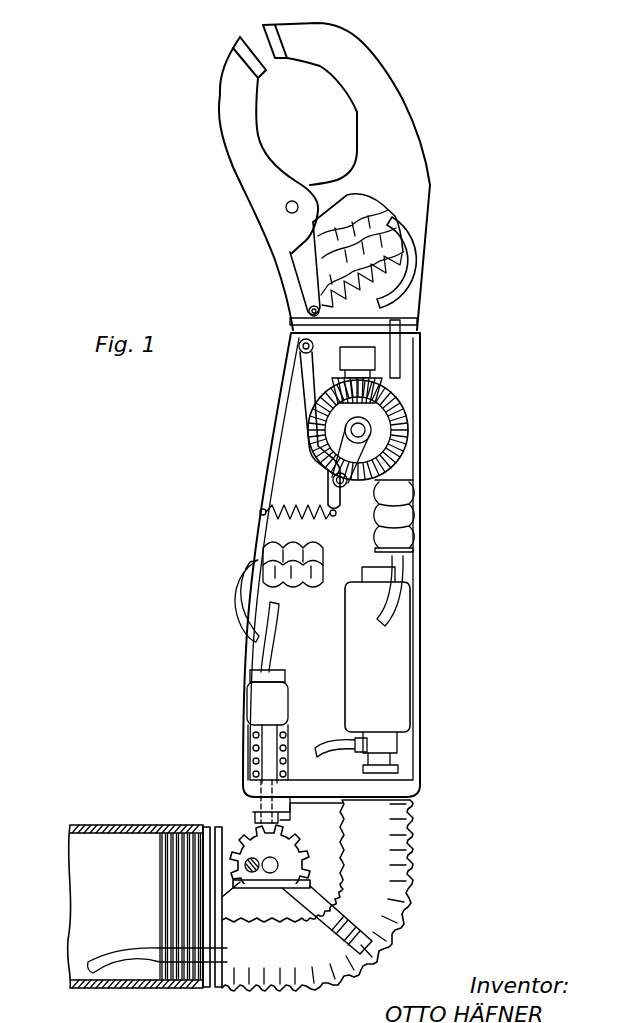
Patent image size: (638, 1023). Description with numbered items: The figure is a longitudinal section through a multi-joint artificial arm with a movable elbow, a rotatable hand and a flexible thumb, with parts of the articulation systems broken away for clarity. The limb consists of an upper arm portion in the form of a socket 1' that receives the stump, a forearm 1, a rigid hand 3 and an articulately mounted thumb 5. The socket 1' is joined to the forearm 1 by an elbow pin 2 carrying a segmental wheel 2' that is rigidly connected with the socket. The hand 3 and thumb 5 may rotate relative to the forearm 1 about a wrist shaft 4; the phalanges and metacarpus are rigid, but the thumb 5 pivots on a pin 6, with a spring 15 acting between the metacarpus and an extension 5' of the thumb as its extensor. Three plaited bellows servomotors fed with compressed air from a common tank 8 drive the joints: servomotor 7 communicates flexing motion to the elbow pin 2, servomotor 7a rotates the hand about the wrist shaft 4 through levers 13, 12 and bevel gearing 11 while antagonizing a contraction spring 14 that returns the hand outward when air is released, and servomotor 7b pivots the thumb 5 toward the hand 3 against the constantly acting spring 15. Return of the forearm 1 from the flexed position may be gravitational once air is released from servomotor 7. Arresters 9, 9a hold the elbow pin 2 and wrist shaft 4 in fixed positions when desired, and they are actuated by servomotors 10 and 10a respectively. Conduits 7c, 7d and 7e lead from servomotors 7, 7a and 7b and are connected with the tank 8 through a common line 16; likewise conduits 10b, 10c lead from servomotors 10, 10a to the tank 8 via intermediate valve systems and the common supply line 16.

The forearm 1 is at (317, 565).
The socket 1' is at (145, 884).
The elbow pin 2 is at (240, 847).
The segmental wheel 2' is at (297, 879).
The rigid hand 3 is at (417, 182).
The shaft 4 is at (367, 350).
The thumb 5 is at (249, 183).
The extension of the thumb 5' is at (278, 269).
The pin 6 is at (286, 208).
The servomotor 7 is at (395, 888).
The servomotor 7a is at (287, 565).
The servomotor 7b is at (310, 253).
The conduit 7c is at (105, 961).
The conduit 7d is at (238, 610).
The conduit 7e is at (393, 290).
The tank 8 is at (397, 685).
The arrester 9 is at (258, 812).
The arrester 9a is at (396, 355).
The servomotor 10 is at (272, 707).
The servomotor 10a is at (417, 505).
The conduit 10b is at (272, 632).
The conduit 10c is at (393, 595).
The bevel gearing 11 is at (400, 420).
The lever 12 is at (347, 453).
The lever 13 is at (327, 480).
The contraction spring 14 is at (263, 512).
The spring 15 is at (403, 263).
The common line 16 is at (333, 745).